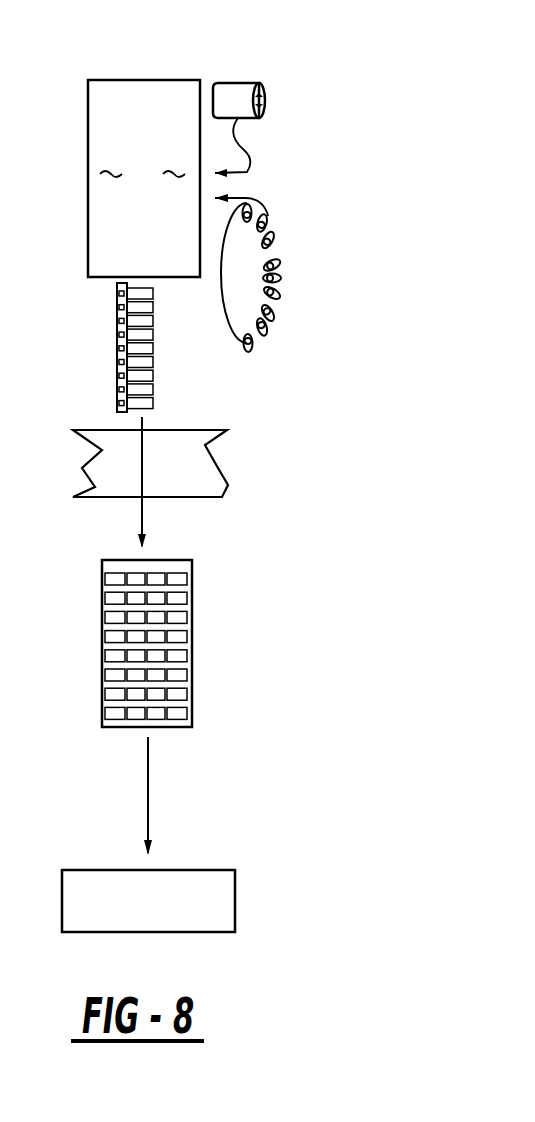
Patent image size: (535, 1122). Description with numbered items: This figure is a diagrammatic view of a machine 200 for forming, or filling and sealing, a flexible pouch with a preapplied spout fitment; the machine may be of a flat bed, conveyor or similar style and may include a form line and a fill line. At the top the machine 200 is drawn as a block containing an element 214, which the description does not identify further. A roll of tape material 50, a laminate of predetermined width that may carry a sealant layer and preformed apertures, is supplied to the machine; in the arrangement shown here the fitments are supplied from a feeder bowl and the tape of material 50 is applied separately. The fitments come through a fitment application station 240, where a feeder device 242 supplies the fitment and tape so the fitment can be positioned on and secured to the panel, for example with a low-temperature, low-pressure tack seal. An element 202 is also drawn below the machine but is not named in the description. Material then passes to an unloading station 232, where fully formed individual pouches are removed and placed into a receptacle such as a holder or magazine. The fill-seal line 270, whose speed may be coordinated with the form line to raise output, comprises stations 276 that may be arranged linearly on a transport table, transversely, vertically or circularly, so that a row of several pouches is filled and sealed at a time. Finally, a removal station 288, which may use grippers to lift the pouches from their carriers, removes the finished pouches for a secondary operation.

The tape material 50 is at (248, 83).
The machine 200 is at (80, 142).
The filling station 214 is at (142, 172).
The cartridge strip 202 is at (143, 366).
The fitment application station 240 is at (322, 273).
The feeder device 242 is at (266, 210).
The unloading station 232 is at (107, 430).
The fill-seal line 270 is at (145, 688).
The stations 276 is at (108, 567).
The removal station 288 is at (212, 870).